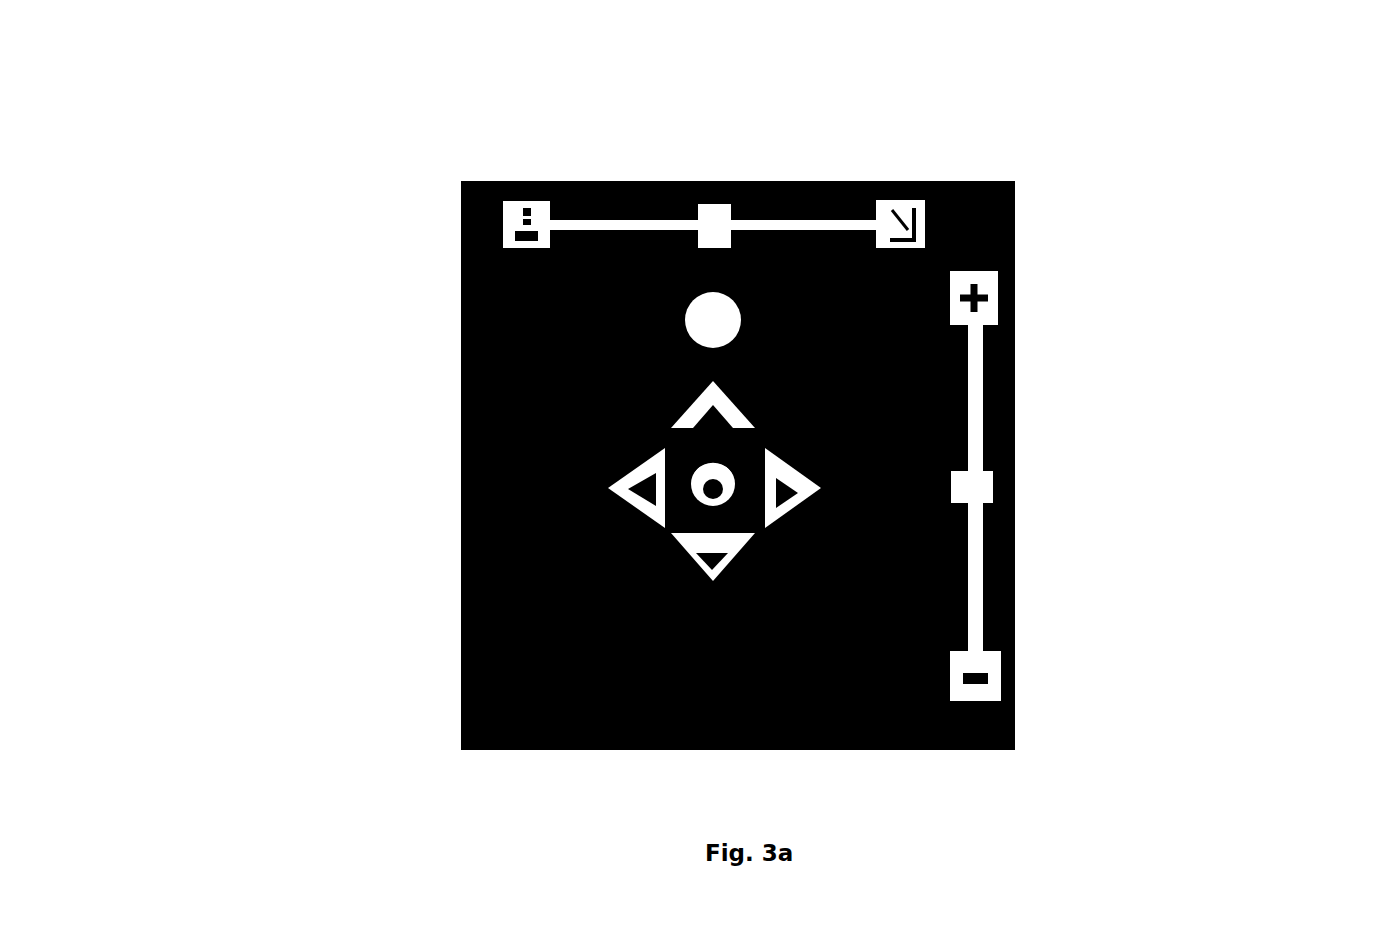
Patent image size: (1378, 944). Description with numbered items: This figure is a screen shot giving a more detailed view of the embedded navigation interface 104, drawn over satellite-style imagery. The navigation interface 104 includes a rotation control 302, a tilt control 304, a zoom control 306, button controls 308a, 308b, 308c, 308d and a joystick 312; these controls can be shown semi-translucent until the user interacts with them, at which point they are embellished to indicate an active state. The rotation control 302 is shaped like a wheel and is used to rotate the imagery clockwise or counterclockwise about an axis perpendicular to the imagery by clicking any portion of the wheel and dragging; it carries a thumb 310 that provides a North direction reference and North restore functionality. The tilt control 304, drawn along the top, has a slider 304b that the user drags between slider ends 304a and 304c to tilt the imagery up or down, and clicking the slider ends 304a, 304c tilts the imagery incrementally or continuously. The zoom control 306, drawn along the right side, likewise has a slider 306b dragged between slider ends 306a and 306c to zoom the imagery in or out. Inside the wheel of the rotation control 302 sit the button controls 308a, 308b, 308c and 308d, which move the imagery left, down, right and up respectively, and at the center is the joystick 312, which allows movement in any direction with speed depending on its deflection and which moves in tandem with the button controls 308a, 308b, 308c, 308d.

The navigation interface 104 is at (733, 122).
The rotation control 302 is at (733, 393).
The tilt control 304 is at (662, 144).
The slider end 304a is at (523, 217).
The slider 304b is at (812, 177).
The slider end 304c is at (883, 200).
The zoom control 306 is at (1040, 515).
The slider end 306a is at (993, 283).
The slider 306b is at (967, 473).
The slider end 306c is at (993, 662).
The button control 308a is at (640, 478).
The button control 308b is at (690, 560).
The button control 308c is at (790, 507).
The button control 308d is at (760, 402).
The thumb 310 is at (698, 305).
The joystick 312 is at (703, 492).